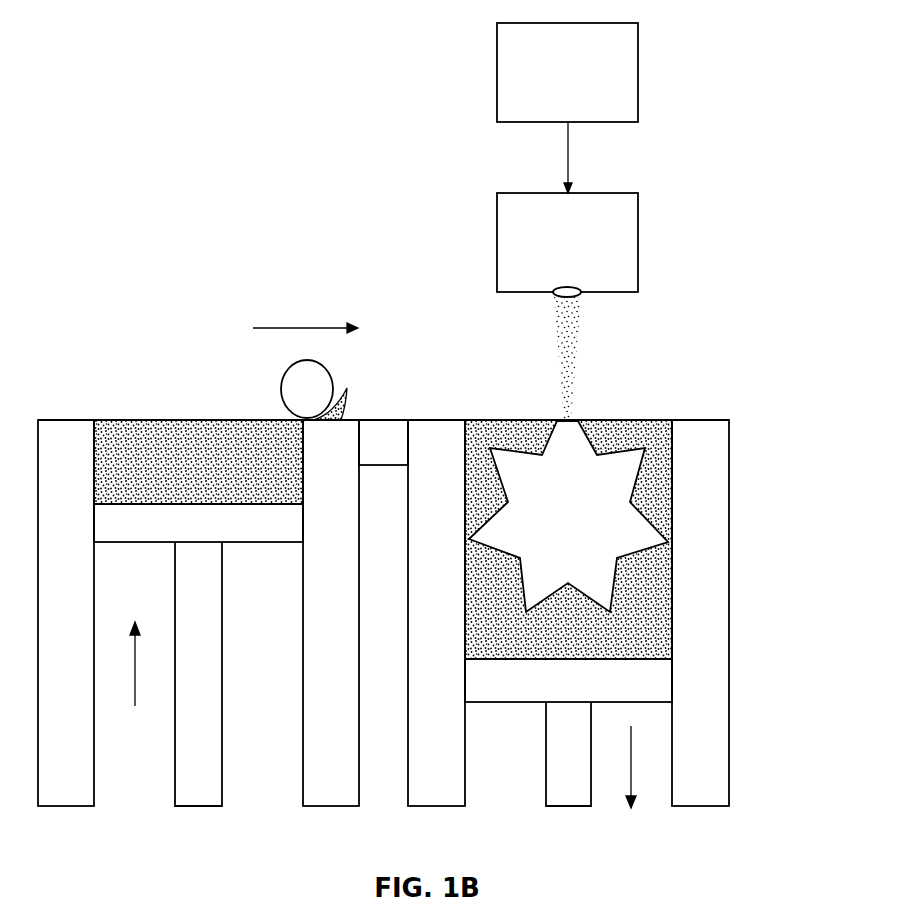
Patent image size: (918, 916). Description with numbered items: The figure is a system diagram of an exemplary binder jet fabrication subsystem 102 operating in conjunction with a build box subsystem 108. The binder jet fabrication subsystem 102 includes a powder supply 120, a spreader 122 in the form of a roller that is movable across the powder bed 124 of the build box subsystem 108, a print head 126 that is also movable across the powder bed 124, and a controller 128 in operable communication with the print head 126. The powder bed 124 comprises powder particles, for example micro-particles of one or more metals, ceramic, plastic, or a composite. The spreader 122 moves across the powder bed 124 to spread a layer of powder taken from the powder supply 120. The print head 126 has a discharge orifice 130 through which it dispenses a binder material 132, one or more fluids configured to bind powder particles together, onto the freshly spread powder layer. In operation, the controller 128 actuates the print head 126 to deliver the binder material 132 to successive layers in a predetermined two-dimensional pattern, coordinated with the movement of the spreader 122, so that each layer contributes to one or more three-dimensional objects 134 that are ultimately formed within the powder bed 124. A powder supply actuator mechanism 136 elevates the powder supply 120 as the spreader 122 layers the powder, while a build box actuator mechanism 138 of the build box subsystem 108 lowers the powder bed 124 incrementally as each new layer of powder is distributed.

The binder jet fabrication subsystem 102 is at (438, 442).
The build box subsystem 108 is at (736, 637).
The powder supply 120 is at (108, 430).
The spreader 122 is at (283, 385).
The powder bed 124 is at (647, 432).
The print head 126 is at (497, 242).
The controller 128 is at (497, 72).
The discharge orifice 130 is at (583, 292).
The binder material 132 is at (560, 390).
The three-dimensional objects 134 is at (572, 458).
The powder supply actuator mechanism 136 is at (202, 796).
The build box actuator mechanism 138 is at (570, 797).